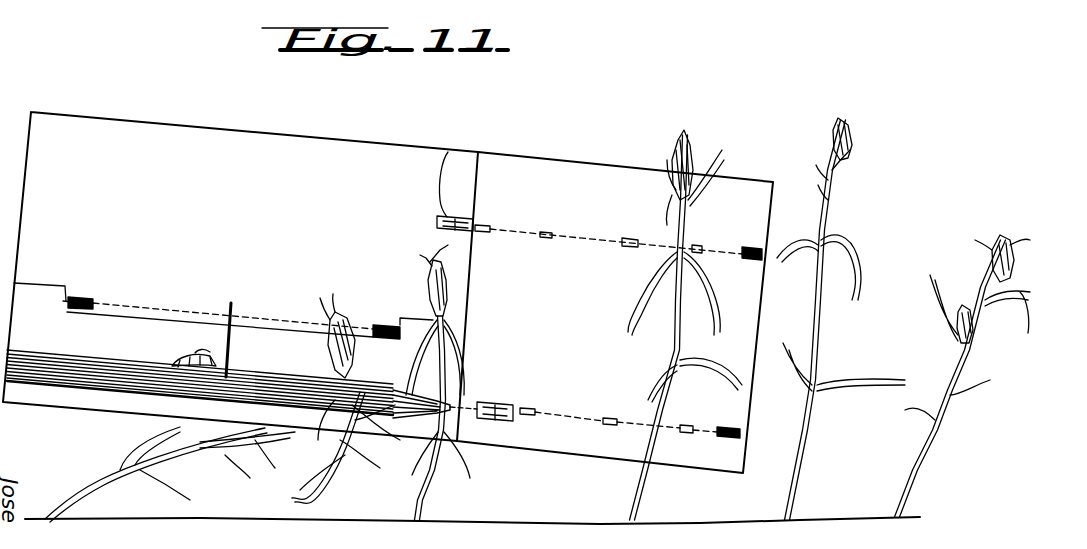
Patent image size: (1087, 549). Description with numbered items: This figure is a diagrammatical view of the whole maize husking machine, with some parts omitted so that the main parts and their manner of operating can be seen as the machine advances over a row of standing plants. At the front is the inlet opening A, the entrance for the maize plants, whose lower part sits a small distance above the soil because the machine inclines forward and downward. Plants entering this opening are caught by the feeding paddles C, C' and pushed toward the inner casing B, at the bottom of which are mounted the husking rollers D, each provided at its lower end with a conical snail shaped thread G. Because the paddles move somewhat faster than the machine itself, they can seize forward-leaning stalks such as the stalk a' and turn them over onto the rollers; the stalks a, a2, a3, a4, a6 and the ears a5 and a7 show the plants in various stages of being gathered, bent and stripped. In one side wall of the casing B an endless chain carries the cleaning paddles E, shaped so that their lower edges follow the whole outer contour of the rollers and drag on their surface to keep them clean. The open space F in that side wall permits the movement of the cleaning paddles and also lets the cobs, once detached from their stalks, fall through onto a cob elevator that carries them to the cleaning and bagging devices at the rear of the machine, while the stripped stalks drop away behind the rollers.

The inlet opening A is at (615, 312).
The inner casing B is at (240, 276).
The feeding paddle C is at (721, 326).
The feeding paddle C' is at (589, 316).
The husking roller D is at (130, 380).
The cleaning paddle E is at (233, 315).
The open space F is at (220, 338).
The conical snail shaped thread G is at (458, 385).
The corn stalk a is at (831, 319).
The stalk a' is at (950, 376).
The corn stalk a2 is at (624, 500).
The corn stalk a3 is at (510, 506).
The corn stalk (bent) a4 is at (293, 498).
The ear of corn a5 is at (322, 372).
The corn stalk (fallen) a6 is at (140, 507).
The ear husk a7 is at (206, 341).